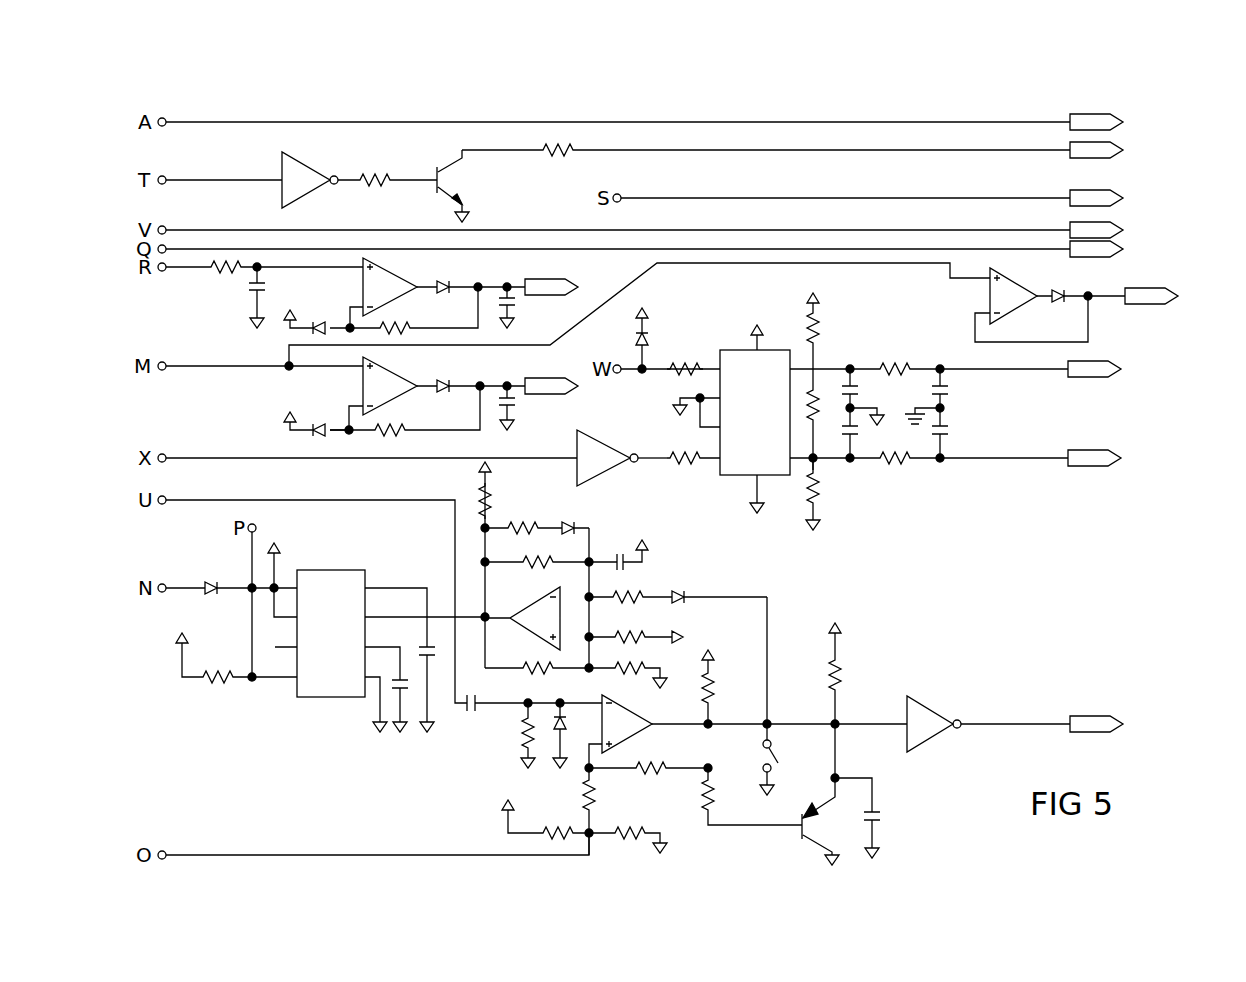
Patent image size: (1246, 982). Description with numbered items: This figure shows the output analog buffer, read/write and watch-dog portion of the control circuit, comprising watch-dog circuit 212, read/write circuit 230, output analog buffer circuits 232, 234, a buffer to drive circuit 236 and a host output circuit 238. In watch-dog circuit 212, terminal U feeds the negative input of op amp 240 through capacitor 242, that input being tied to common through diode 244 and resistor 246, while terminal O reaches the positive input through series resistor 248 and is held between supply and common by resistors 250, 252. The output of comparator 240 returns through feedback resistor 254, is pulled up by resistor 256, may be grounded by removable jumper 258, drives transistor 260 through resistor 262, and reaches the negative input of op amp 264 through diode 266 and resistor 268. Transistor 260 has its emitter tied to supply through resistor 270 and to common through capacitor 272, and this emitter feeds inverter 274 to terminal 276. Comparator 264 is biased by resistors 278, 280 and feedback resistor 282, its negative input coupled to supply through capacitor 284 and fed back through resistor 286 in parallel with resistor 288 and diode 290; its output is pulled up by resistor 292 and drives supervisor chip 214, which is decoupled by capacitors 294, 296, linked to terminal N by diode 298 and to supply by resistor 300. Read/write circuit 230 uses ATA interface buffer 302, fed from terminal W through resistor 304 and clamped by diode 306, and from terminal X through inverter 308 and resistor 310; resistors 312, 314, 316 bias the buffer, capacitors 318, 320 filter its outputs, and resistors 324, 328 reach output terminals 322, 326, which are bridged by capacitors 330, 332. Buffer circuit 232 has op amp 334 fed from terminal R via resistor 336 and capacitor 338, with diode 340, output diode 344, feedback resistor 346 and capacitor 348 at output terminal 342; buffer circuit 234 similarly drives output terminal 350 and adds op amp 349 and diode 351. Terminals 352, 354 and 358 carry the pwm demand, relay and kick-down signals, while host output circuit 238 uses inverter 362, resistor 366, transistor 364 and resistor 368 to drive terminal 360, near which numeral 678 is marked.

The output connector 678 is at (1123, 122).
The terminal 360 is at (1123, 150).
The terminal 358 is at (1123, 198).
The terminal 352 is at (1123, 230).
The terminal 354 is at (1123, 249).
The output terminal 342 is at (1178, 296).
The inverter 362 is at (282, 162).
The resistor 366 is at (375, 172).
The host output circuit 238 is at (676, 173).
The transistor 364 is at (462, 185).
The resistor 368 is at (580, 146).
The buffer to drive circuit 236 is at (676, 187).
The op amp 334 is at (388, 374).
The diode 344 is at (438, 380).
The series resistor 346 is at (398, 425).
The capacitor 348 is at (511, 405).
The resistor 336 is at (223, 276).
The capacitor 338 is at (270, 284).
The diode 340 is at (320, 408).
The output analog buffer circuit 232 is at (683, 343).
The output analog buffer circuit 234 is at (570, 348).
The output terminal 350 is at (555, 380).
The op amp 349 is at (1003, 298).
The diode 351 is at (1058, 304).
The diode 306 is at (636, 338).
The resistor 304 is at (688, 356).
The resistor 312 is at (820, 328).
The resistor 314 is at (818, 407).
The read/write circuit 230 is at (672, 400).
The resistor 324 is at (888, 361).
The capacitor 318 is at (859, 390).
The capacitor 330 is at (952, 390).
The output terminal 322 is at (1121, 369).
The capacitor 332 is at (954, 430).
The output terminal 326 is at (1121, 458).
The ATA interface buffer 302 is at (764, 432).
The inverter 308 is at (611, 442).
The resistor 310 is at (685, 466).
The capacitor 320 is at (856, 452).
The resistor 328 is at (910, 464).
The resistor 316 is at (825, 504).
The resistor 292 is at (493, 488).
The resistor 288 is at (509, 526).
The diode 290 is at (569, 526).
The capacitor 284 is at (623, 560).
The resistor 268 is at (638, 595).
The diode 266 is at (683, 595).
The resistor 286 is at (533, 565).
The op amp 264 is at (544, 608).
The resistor 278 is at (629, 636).
The feedback resistor 282 is at (544, 660).
The resistor 280 is at (639, 665).
The resistor 256 is at (710, 698).
The capacitor 242 is at (475, 703).
The resistor 246 is at (521, 724).
The op amp 240 is at (641, 708).
The feedback resistor 254 is at (643, 766).
The resistor 262 is at (720, 810).
The removable jumper 258 is at (777, 756).
The resistor 270 is at (845, 676).
The inverter 274 is at (940, 704).
The terminal 276 is at (1123, 724).
The capacitor 272 is at (884, 818).
The transistor 260 is at (800, 836).
The diode 244 is at (573, 728).
The series resistor 248 is at (603, 804).
The resistor 252 is at (623, 827).
The resistor 250 is at (516, 834).
The diode 298 is at (214, 578).
The supervisor chip 214 is at (341, 576).
The capacitor 294 is at (423, 648).
The capacitor 296 is at (373, 686).
The resistor 300 is at (215, 712).
The watch-dog circuit 212 is at (667, 663).